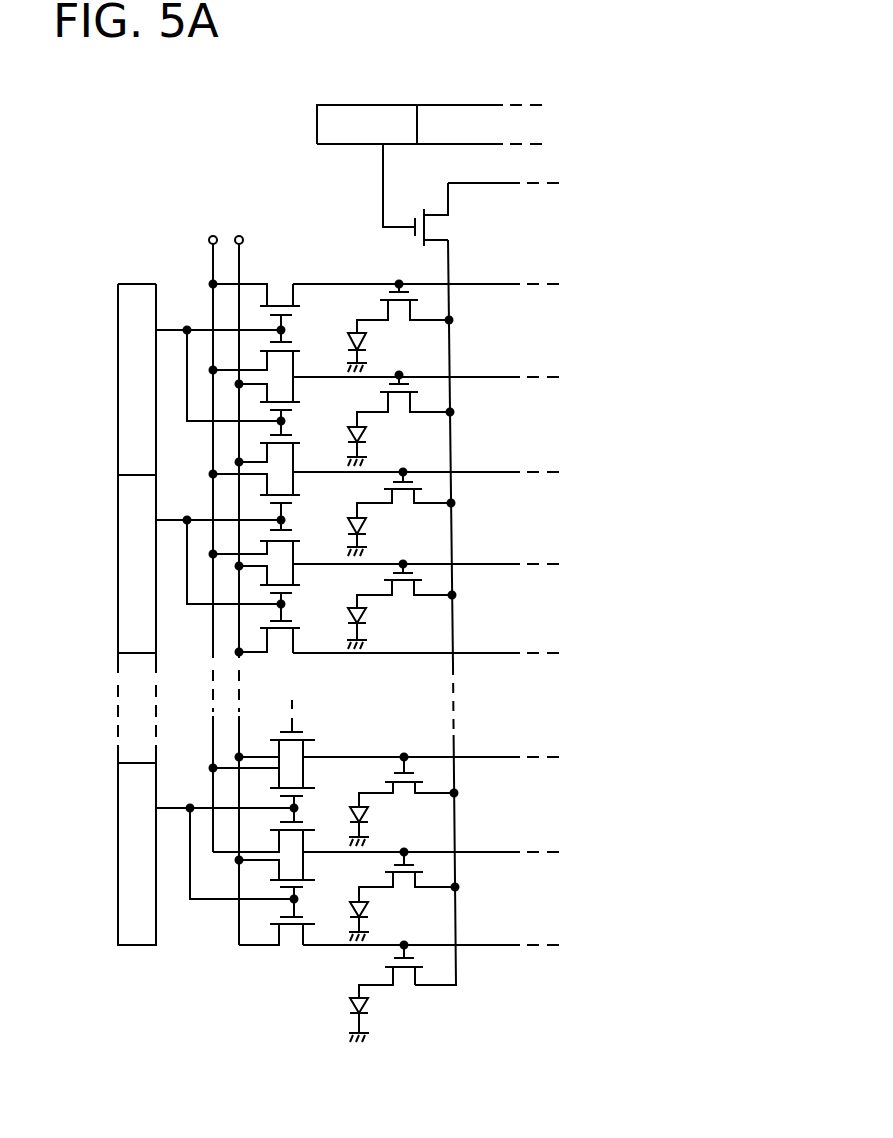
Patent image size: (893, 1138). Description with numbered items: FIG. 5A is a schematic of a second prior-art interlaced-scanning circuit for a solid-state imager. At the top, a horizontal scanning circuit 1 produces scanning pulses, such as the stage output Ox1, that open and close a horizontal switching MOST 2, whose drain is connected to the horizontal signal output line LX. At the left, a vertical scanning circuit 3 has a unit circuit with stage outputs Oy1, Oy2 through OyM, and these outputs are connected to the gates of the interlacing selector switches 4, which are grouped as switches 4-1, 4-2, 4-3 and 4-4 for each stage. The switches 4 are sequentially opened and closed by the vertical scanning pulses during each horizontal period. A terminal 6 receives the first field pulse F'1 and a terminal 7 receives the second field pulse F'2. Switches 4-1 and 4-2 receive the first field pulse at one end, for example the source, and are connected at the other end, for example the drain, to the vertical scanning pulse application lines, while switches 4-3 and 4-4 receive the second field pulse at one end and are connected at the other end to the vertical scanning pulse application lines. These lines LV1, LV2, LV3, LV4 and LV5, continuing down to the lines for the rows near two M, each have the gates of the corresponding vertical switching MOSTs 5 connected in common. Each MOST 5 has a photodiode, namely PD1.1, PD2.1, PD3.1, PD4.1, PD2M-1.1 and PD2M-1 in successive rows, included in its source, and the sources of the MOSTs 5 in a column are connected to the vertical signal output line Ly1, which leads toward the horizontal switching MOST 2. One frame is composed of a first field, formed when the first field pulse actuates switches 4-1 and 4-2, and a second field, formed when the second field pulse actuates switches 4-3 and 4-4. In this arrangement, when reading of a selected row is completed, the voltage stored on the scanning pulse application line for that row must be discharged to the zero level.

The horizontal scanning circuit 1 is at (465, 104).
The horizontal switching MOST 2 is at (438, 222).
The vertical scanning circuit 3 is at (132, 284).
The interlacing selector switches 4 is at (285, 284).
The interlacing selector switch 4-1 is at (300, 313).
The interlacing selector switch 4-2 is at (300, 348).
The interlacing selector switch 4-3 is at (300, 406).
The interlacing selector switch 4-4 is at (300, 440).
The vertical switching MOST 5 is at (386, 304).
The terminal 6 is at (212, 236).
The terminal 7 is at (239, 236).
The stage output of horizontal scanning circuit Ox1 is at (386, 150).
The stage output Oy1 is at (184, 329).
The stage output Oy2 is at (188, 519).
The stage output OyM is at (186, 807).
The first field pulse F'1 is at (197, 249).
The second field pulse F'2 is at (259, 249).
The horizontal signal output line LX is at (536, 186).
The vertical scanning pulse application line LV1 is at (529, 287).
The vertical scanning pulse application line LV2 is at (529, 380).
The vertical scanning pulse application line LV3 is at (529, 475).
The vertical scanning pulse application line LV4 is at (529, 567).
The vertical scanning pulse application line LV5 is at (529, 656).
The photodiode PD1.1 is at (366, 340).
The photodiode PD2.1 is at (366, 433).
The photodiode PD3.1 is at (366, 524).
The photodiode PD4.1 is at (366, 615).
The photodiode PD2M-1.1 is at (368, 813).
The photodiode PD2M-1 is at (368, 908).
The vertical signal output line Ly1 is at (447, 987).